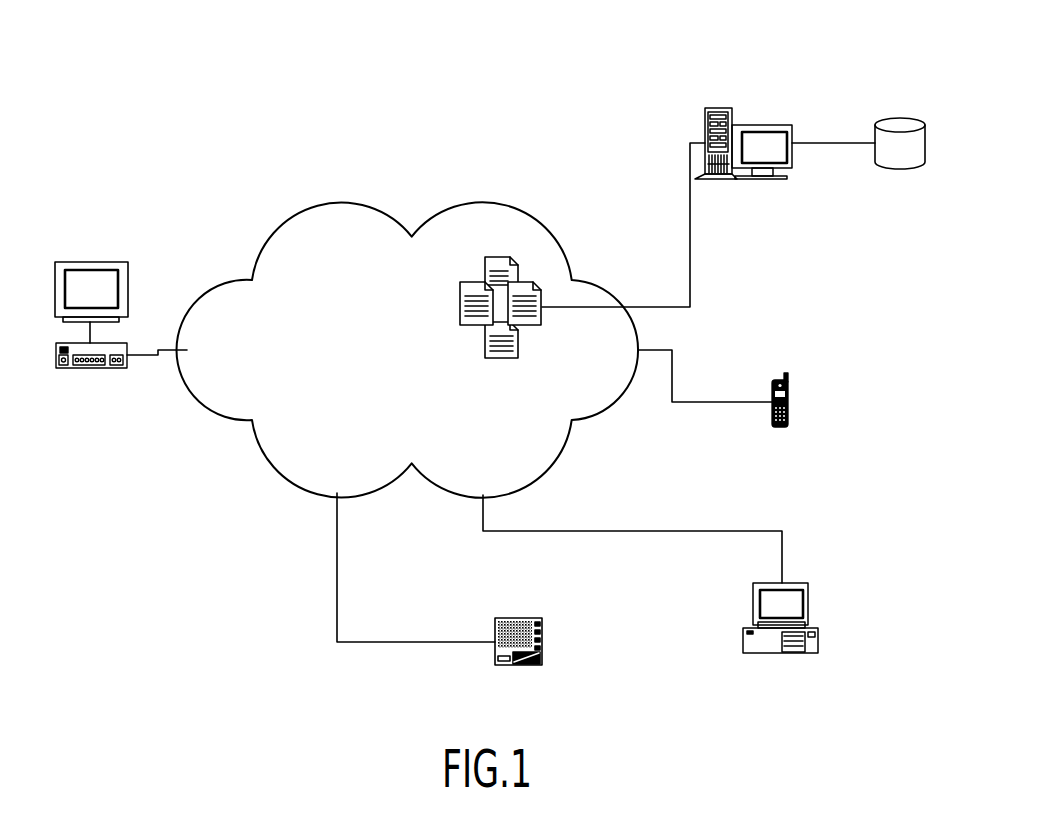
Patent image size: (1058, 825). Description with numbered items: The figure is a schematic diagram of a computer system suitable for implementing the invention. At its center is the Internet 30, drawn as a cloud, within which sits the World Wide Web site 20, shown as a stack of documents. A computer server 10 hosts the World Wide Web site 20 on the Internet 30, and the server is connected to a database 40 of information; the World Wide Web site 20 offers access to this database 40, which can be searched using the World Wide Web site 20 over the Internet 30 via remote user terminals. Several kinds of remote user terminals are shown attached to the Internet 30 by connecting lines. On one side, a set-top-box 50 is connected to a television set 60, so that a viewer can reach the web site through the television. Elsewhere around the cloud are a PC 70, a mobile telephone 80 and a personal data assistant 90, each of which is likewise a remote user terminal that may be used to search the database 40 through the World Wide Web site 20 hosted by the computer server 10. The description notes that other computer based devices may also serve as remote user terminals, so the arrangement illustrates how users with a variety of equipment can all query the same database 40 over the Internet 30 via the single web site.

The computer server 10 is at (715, 105).
The World Wide Web site 20 is at (500, 255).
The Internet 30 is at (352, 287).
The database 40 is at (900, 143).
The set-top-box 50 is at (112, 368).
The television set 60 is at (92, 290).
The PC 70 is at (808, 618).
The mobile telephone 80 is at (788, 402).
The personal data assistant 90 is at (518, 642).